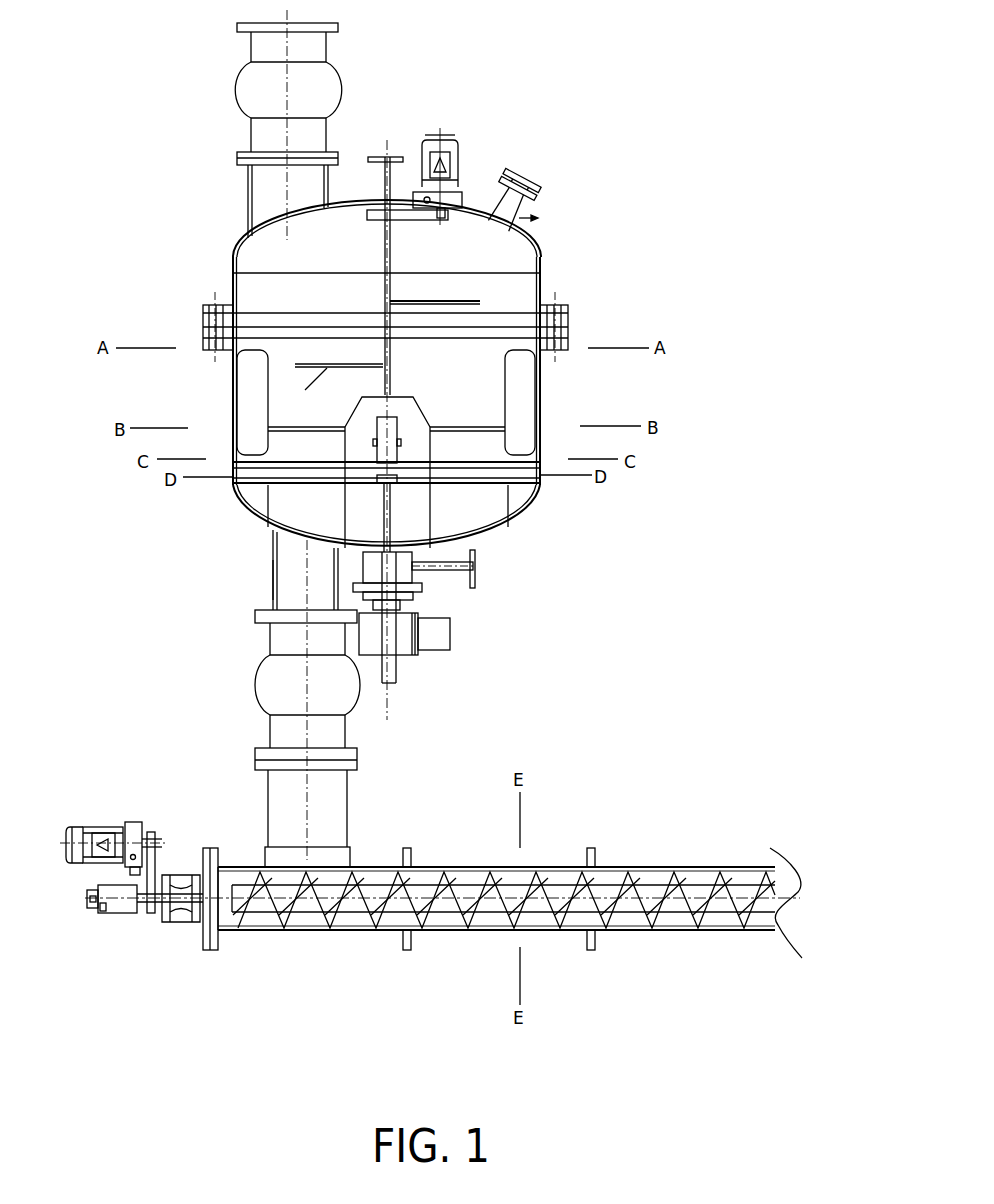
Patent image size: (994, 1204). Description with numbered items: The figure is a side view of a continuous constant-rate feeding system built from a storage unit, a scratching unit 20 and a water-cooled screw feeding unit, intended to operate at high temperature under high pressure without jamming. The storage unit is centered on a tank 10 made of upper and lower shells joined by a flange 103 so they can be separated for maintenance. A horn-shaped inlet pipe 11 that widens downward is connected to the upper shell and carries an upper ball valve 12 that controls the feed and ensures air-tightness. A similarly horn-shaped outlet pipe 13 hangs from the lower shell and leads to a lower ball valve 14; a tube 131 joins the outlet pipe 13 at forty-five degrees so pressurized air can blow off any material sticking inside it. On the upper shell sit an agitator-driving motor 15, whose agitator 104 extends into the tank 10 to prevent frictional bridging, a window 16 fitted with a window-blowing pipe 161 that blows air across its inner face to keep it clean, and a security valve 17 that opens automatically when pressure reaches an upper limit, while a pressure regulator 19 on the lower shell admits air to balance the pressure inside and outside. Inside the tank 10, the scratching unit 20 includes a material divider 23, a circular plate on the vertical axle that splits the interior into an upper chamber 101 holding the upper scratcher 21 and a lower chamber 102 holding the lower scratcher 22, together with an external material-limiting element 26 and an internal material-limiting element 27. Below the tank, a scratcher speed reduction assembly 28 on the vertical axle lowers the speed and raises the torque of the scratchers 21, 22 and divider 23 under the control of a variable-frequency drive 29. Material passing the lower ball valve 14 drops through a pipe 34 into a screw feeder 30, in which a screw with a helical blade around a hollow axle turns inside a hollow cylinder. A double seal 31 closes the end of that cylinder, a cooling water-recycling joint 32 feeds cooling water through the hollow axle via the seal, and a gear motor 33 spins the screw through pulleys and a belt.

The tank 10 is at (226, 278).
The upper chamber 101 is at (543, 260).
The lower chamber 102 is at (526, 523).
The flange 103 is at (503, 327).
The agitator 104 is at (385, 303).
The inlet pipe 11 is at (245, 203).
The upper ball valve 12 is at (256, 93).
The outlet pipe 13 is at (290, 583).
The tube 131 is at (275, 585).
The lower ball valve 14 is at (285, 688).
The agitator-driving motor 15 is at (458, 150).
The window 16 is at (505, 187).
The window-blowing pipe 161 is at (538, 213).
The security valve 17 is at (387, 155).
The pressure regulator 19 is at (477, 578).
The scratching unit 20 is at (717, 390).
The upper scratcher 21 is at (527, 413).
The lower scratcher 22 is at (480, 500).
The material divider 23 is at (290, 468).
The external material-limiting element 26 is at (265, 485).
The internal material-limiting element 27 is at (432, 510).
The scratcher speed reduction assembly 28 is at (403, 653).
The variable-frequency drive 29 is at (438, 633).
The screw feeder 30 is at (482, 912).
The double seal 31 is at (188, 913).
The cooling water-recycling joint 32 is at (122, 907).
The gear motor 33 is at (133, 822).
The pipe 34 is at (318, 815).